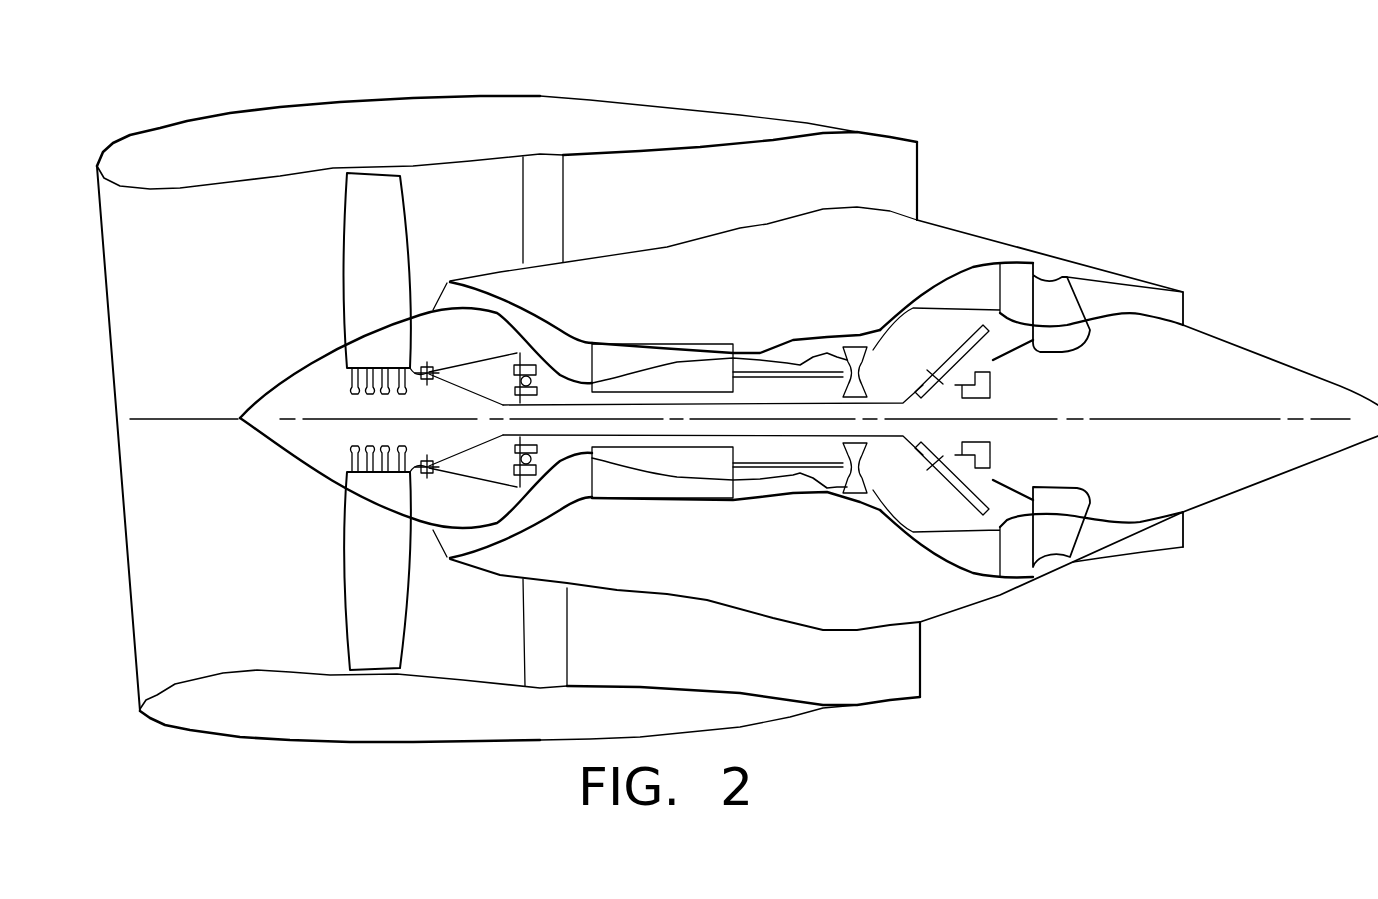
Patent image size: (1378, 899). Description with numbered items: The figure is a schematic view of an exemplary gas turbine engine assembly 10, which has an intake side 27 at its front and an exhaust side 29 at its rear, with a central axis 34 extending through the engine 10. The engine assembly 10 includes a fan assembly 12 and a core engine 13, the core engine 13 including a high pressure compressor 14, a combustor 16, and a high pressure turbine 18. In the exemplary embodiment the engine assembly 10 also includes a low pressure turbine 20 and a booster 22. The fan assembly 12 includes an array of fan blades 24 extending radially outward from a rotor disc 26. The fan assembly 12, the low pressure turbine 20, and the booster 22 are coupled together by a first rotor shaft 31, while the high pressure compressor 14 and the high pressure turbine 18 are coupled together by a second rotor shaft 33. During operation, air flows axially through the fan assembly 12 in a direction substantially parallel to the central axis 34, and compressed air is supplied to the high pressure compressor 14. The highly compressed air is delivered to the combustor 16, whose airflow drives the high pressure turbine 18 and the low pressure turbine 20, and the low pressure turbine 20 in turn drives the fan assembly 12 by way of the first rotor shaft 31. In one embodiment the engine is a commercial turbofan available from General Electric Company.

The gas turbine engine assembly 10 is at (807, 59).
The fan assembly 12 is at (376, 575).
The core engine 13 is at (753, 238).
The high pressure compressor 14 is at (613, 358).
The combustor 16 is at (807, 350).
The high pressure turbine 18 is at (853, 332).
The low pressure turbine 20 is at (953, 287).
The booster 22 is at (500, 302).
The fan blades 24 is at (368, 250).
The rotor disc 26 is at (377, 495).
The intake side 27 is at (78, 212).
The exhaust side 29 is at (968, 158).
The first rotor shaft 31 is at (762, 400).
The second rotor shaft 33 is at (820, 463).
The central axis 34 is at (160, 419).